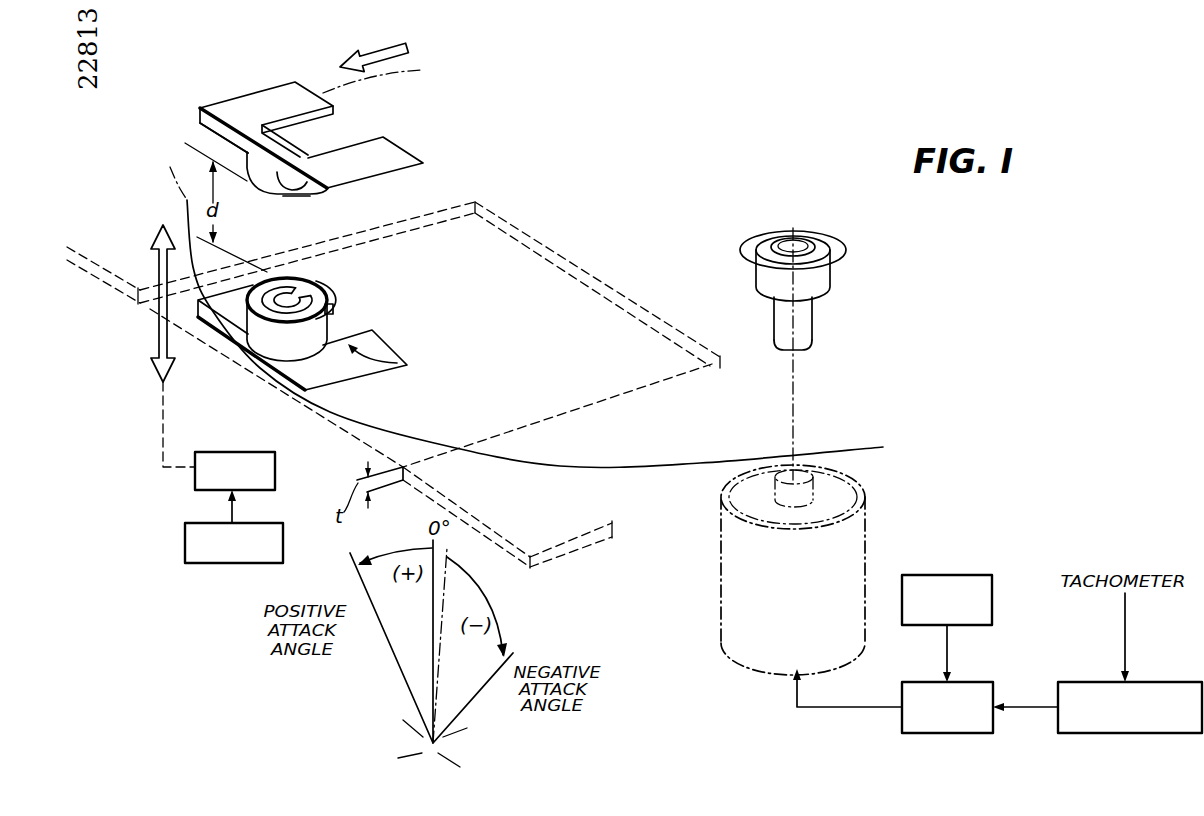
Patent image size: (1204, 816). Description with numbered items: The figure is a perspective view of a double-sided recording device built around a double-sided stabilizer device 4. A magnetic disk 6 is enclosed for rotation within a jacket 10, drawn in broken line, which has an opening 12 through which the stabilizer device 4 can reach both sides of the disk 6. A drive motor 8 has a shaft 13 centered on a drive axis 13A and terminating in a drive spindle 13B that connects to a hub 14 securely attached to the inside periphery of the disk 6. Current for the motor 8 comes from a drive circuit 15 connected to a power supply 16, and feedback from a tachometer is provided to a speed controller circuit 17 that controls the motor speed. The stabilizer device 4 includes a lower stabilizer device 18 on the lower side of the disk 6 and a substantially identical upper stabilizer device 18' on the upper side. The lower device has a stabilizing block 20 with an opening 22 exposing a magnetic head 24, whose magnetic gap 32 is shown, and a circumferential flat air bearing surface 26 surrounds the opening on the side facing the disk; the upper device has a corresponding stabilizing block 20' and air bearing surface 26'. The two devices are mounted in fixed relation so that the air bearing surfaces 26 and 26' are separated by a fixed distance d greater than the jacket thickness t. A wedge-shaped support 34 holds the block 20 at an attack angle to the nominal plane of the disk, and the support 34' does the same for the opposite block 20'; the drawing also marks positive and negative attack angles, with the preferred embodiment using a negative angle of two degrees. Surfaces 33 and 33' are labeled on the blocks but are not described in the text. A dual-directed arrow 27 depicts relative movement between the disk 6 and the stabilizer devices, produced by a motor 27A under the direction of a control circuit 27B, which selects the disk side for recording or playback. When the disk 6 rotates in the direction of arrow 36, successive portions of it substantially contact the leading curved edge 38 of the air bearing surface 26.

The double-sided stabilizer device 4 is at (414, 201).
The magnetic disk 6 is at (170, 167).
The drive motor 8 is at (853, 498).
The jacket 10 is at (110, 268).
The opening 12 is at (665, 364).
The shaft 13 is at (806, 336).
The drive axis 13A is at (810, 326).
The drive spindle 13B is at (820, 281).
The hub 14 is at (790, 222).
The drive circuit 15 is at (988, 686).
The power supply 16 is at (938, 573).
The speed controller circuit 17 is at (1168, 688).
The lower stabilizer device 18 is at (376, 360).
The upper stabilizer device 18' is at (386, 130).
The stabilizing block 20 is at (251, 337).
The stabilizing block 20' is at (307, 173).
The opening 22 is at (270, 328).
The magnetic head 24 is at (333, 311).
The flat air bearing surface 26 is at (266, 264).
The flat air bearing surface 26' is at (334, 208).
The dual-directed arrow 27 is at (158, 268).
The motor 27A is at (240, 452).
The control circuit 27B is at (287, 520).
The magnetic gap 32 is at (294, 278).
The head top surface 33 is at (352, 295).
The head underside 33' is at (196, 119).
The wedge-shaped support 34 is at (304, 289).
The wedge-shaped support 34' is at (266, 110).
The arrow 36 is at (373, 55).
The leading curved edge 38 is at (289, 276).